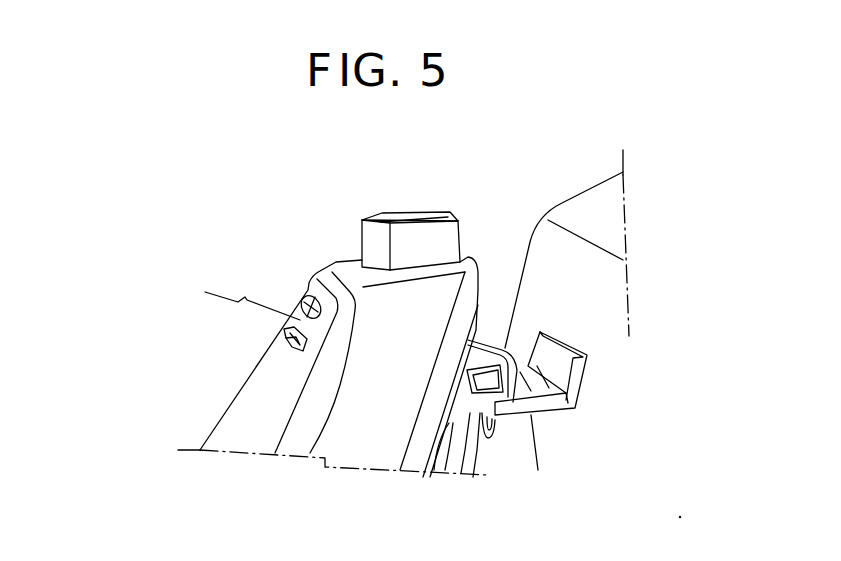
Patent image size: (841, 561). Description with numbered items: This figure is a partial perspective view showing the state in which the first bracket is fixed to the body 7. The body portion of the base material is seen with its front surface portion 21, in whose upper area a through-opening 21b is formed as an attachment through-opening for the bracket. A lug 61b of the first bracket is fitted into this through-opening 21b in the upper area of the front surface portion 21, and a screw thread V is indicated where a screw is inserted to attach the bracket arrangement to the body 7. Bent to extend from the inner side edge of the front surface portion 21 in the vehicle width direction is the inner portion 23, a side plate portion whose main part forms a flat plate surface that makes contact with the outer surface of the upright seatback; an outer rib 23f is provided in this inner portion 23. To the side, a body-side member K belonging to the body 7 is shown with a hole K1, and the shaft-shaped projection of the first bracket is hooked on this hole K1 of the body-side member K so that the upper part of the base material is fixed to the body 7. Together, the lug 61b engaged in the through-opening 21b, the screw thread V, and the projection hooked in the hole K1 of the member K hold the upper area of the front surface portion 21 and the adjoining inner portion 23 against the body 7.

The body 7 is at (560, 203).
The screw thread V is at (302, 300).
The through-opening 21b is at (230, 296).
The lug 61b is at (283, 335).
The front surface portion 21 is at (250, 413).
The inner portion 23 is at (380, 398).
The outer rib 23f is at (432, 477).
The hole K1 is at (463, 473).
The body-side member K is at (538, 470).